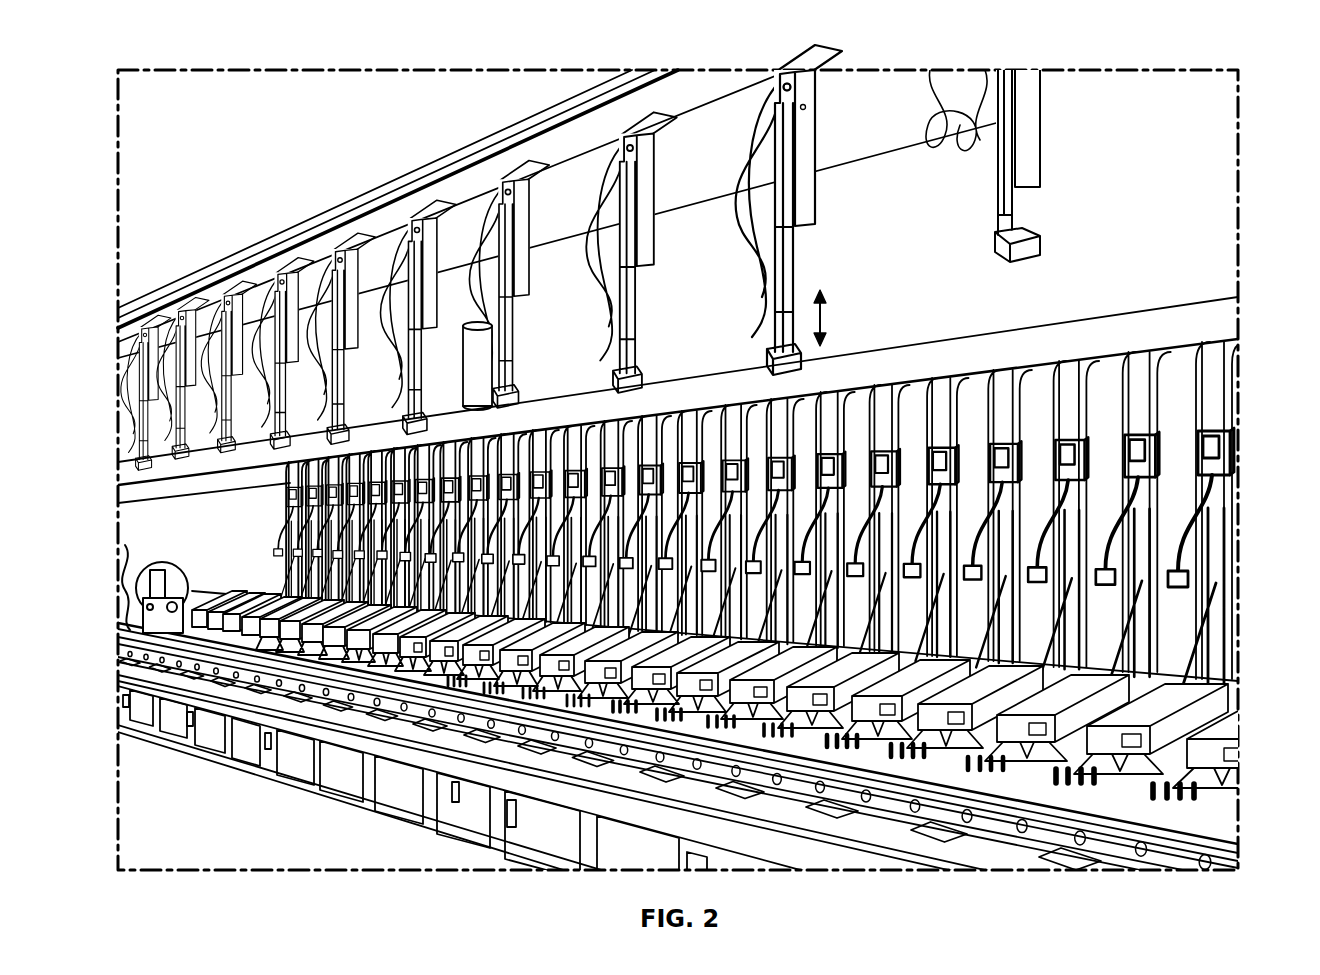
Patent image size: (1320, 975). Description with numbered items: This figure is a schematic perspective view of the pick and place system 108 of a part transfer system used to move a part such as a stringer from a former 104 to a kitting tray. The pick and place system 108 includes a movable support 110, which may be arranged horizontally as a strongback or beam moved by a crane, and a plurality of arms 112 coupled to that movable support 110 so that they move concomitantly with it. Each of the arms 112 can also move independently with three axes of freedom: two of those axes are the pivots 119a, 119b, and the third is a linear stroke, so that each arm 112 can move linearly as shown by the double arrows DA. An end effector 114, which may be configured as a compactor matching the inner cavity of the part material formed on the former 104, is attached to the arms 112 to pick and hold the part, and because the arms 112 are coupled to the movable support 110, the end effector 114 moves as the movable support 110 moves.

The former 104 is at (270, 648).
The pick and place system 108 is at (276, 232).
The movable support 110 is at (428, 186).
The arms 112 is at (561, 243).
The end effector 114 is at (1180, 328).
The pivot 119a is at (777, 86).
The pivot 119b is at (806, 107).
The double arrows DA is at (828, 320).